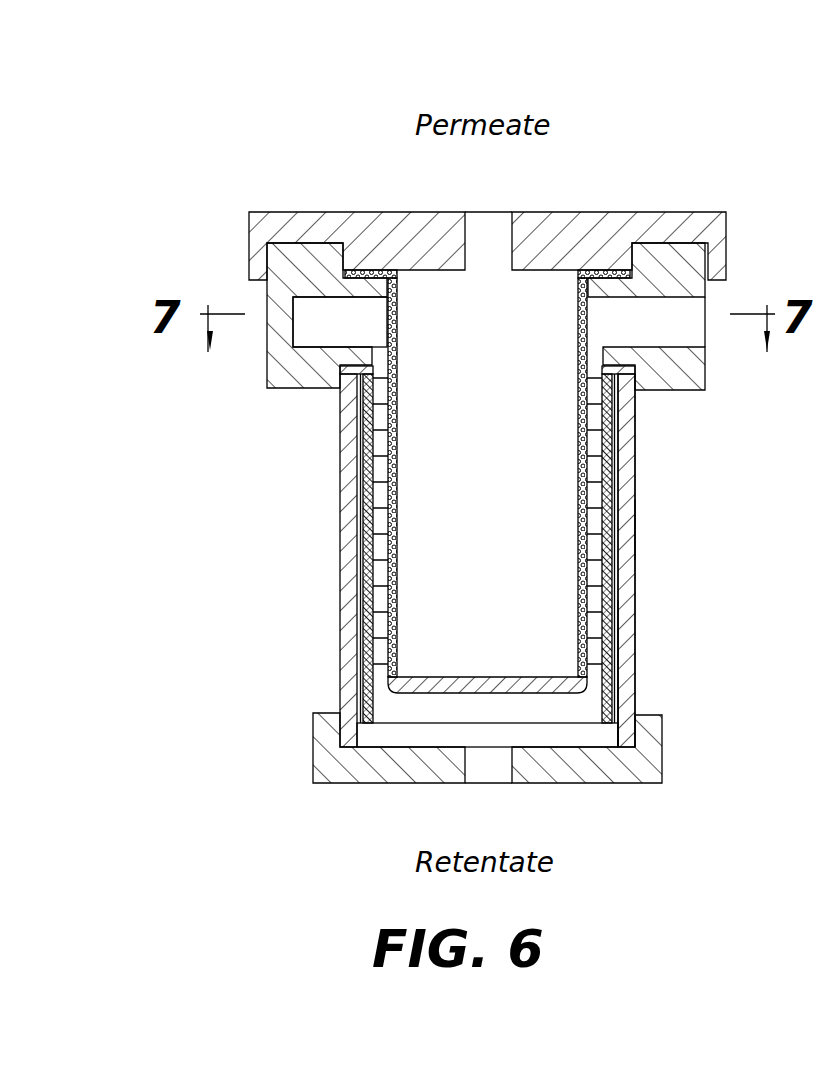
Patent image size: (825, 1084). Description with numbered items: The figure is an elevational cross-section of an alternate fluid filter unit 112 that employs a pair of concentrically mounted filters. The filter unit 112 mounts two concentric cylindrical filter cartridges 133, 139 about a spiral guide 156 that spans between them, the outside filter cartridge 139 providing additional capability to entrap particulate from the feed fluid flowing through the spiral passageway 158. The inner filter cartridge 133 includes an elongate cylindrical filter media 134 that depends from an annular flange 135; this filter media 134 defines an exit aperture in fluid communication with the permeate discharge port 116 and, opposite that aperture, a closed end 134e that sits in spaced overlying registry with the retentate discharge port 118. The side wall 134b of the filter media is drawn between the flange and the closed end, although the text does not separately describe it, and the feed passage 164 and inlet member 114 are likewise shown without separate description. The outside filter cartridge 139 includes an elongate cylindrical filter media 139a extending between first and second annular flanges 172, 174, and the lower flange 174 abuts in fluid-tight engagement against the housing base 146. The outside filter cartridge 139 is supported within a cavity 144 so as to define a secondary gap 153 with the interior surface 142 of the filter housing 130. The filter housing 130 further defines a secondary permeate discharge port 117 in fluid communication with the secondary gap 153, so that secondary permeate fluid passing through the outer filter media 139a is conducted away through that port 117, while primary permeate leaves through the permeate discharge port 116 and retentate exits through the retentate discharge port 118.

The filter unit 112 is at (268, 160).
The annular flange 135 is at (377, 257).
The permeate discharge port 116 is at (500, 212).
The filter cartridge 133 is at (382, 318).
The feed flow passage 164 is at (302, 336).
The feed inlet member 114 is at (682, 338).
The first annular flange 172 is at (352, 378).
The cavity 144 is at (613, 412).
The spiral passageway 158 is at (597, 455).
The filter housing 130 is at (339, 481).
The secondary gap 153 is at (620, 488).
The interior surface 142 is at (375, 517).
The secondary permeate discharge port 117 is at (642, 533).
The outside filter cartridge 139 is at (349, 586).
The spiral guide 156 is at (620, 578).
The membrane side wall 134b is at (386, 663).
The filter media 139a is at (636, 615).
The second annular flange 174 is at (361, 721).
The filter media 134 is at (553, 695).
The housing base 146 is at (335, 763).
The closed end 134e is at (525, 690).
The retentate discharge port 118 is at (493, 777).